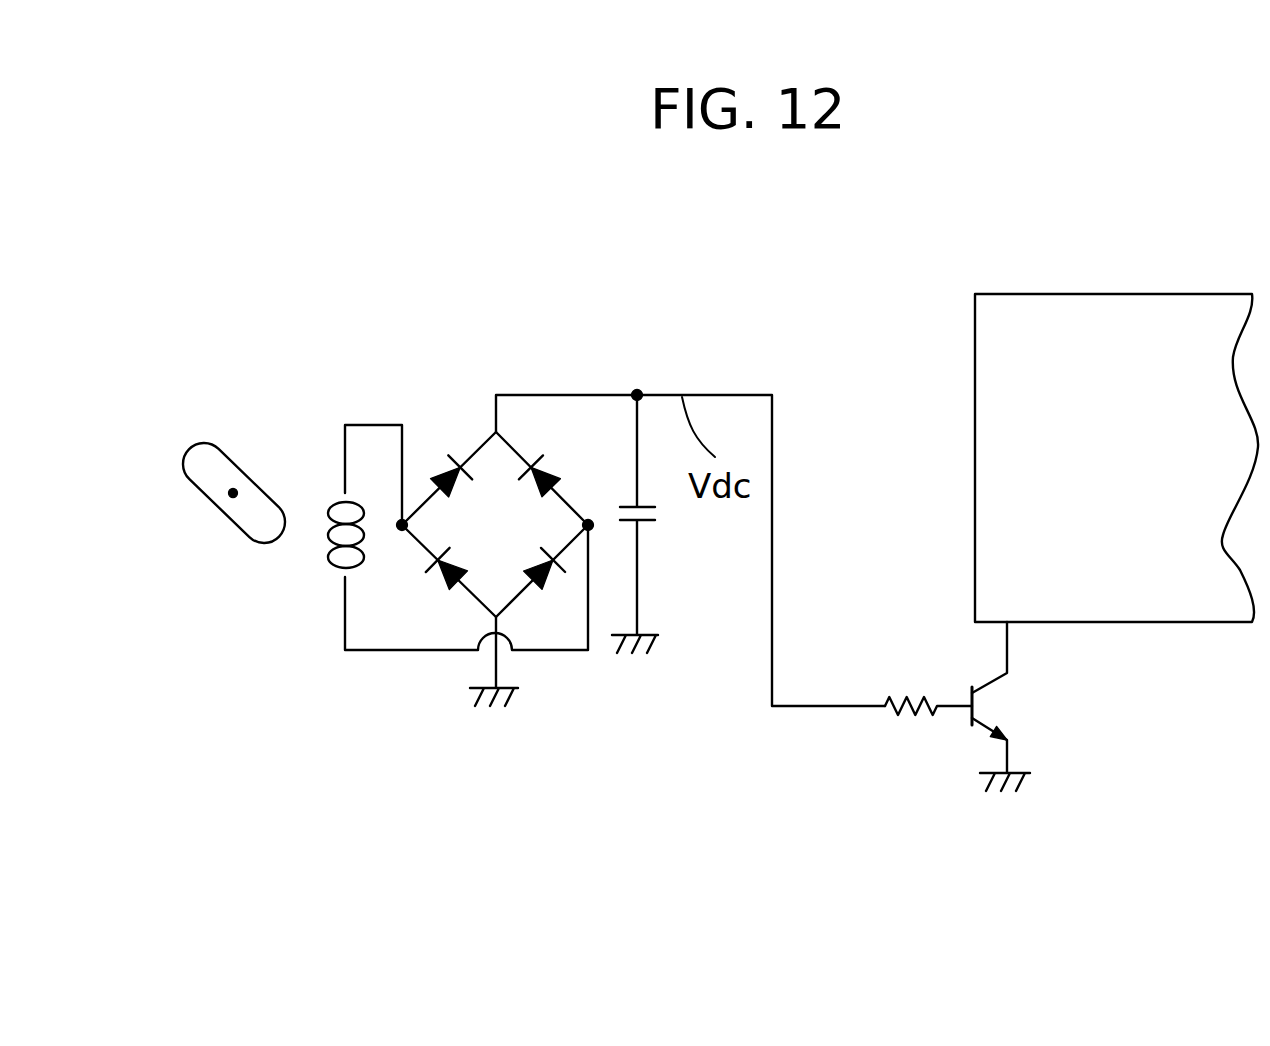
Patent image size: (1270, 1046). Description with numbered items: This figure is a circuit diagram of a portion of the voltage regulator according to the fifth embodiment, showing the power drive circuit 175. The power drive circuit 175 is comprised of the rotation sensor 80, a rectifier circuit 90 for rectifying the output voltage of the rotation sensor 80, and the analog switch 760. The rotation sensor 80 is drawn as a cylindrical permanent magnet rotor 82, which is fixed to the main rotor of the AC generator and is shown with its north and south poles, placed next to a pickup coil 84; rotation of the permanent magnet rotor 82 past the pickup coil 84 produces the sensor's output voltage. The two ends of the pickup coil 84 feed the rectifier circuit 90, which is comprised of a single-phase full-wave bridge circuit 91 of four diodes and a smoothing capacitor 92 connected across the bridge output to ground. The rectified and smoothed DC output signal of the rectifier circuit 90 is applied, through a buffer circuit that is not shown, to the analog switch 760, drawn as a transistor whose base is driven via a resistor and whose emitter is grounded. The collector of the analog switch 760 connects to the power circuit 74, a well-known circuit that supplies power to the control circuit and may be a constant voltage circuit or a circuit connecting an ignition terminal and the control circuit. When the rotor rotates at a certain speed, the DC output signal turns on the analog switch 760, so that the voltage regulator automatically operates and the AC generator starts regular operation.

The power circuit 74 is at (1092, 597).
The rotation sensor 80 is at (262, 460).
The permanent magnet rotor 82 is at (243, 552).
The pickup coil 84 is at (323, 557).
The rectifier circuit 90 is at (527, 666).
The single-phase full-wave bridge circuit 91 is at (557, 468).
The smoothing capacitor 92 is at (648, 523).
The power drive circuit 175 is at (438, 767).
The analog switch 760 is at (983, 745).